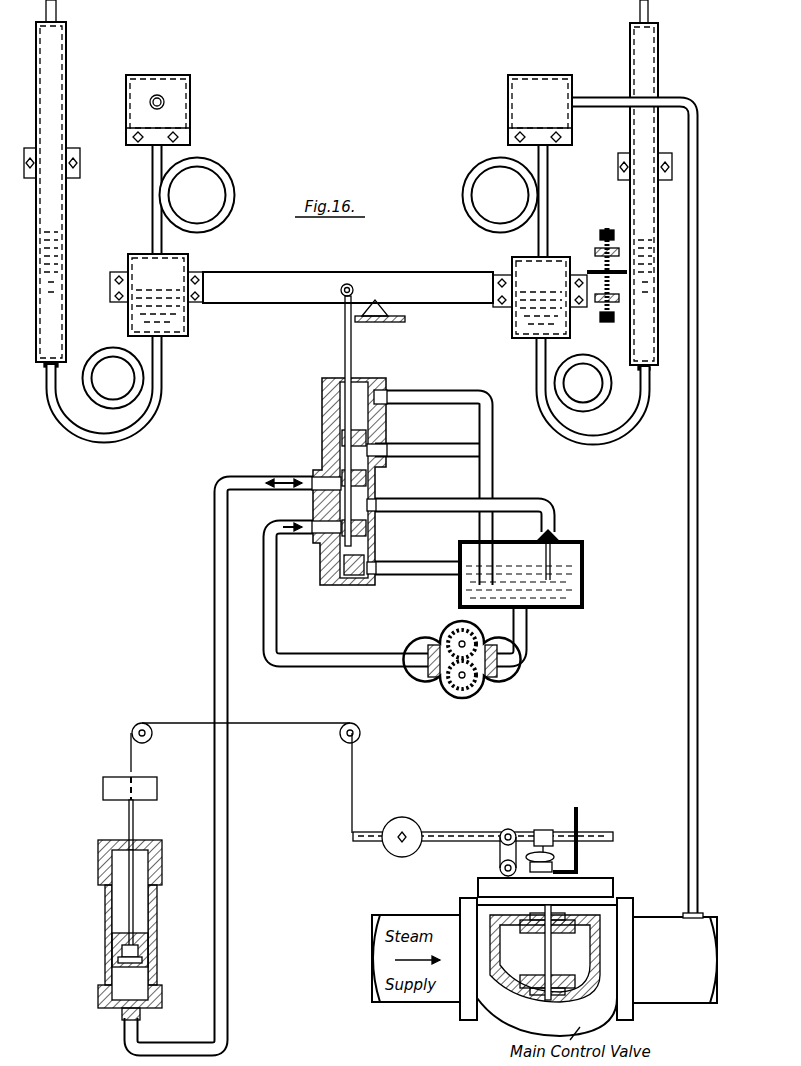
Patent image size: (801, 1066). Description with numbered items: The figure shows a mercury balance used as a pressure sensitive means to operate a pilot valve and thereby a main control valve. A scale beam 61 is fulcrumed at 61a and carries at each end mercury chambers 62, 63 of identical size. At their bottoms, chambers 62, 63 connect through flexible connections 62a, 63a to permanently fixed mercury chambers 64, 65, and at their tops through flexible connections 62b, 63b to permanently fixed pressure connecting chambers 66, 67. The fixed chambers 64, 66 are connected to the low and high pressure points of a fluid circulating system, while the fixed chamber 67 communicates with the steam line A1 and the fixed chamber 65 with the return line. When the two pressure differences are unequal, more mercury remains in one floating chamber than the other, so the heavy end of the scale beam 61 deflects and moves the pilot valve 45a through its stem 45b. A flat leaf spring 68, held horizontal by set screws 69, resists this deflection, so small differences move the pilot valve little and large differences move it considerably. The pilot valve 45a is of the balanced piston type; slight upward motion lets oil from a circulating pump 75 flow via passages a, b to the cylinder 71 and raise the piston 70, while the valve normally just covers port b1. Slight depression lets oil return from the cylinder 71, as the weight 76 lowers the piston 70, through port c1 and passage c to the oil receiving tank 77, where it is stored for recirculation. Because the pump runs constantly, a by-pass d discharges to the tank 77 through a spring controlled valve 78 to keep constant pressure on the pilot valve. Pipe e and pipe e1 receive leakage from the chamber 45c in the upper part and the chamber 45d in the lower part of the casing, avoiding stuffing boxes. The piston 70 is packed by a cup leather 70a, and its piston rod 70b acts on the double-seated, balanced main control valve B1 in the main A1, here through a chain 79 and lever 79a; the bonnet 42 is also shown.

The fixed mercury chamber 64 is at (40, 208).
The fixed mercury chamber 65 is at (660, 220).
The fixed pressure connecting chamber 66 is at (126, 100).
The fixed pressure connecting chamber 67 is at (508, 108).
The mercury chamber 62 is at (156, 295).
The flexible connection 62a is at (113, 378).
The flexible connection 62b is at (197, 195).
The mercury chamber 63 is at (540, 297).
The flexible connection 63a is at (583, 383).
The flexible connection 63b is at (500, 195).
The scale beam 61 is at (348, 287).
The fulcrum 61a is at (402, 287).
The flat leaf spring 68 is at (598, 268).
The set screws 69 is at (607, 230).
The pilot valve 45a is at (376, 482).
The pilot valve stem 45b is at (347, 344).
The upper chamber of pilot valve casing 45c is at (384, 380).
The lower chamber of pilot valve casing 45d is at (351, 578).
The passage a is at (350, 660).
The passage b is at (214, 560).
The port b1 is at (314, 478).
The passage c is at (427, 462).
The port c1 is at (384, 437).
The by-pass d is at (510, 503).
The pipe e is at (436, 481).
The pipe e1 is at (418, 556).
The circulating pump 75 is at (472, 697).
The oil receiving tank 77 is at (582, 551).
The spring controlled valve 78 is at (560, 540).
The piston 70 is at (112, 956).
The cup leather 70a is at (148, 953).
The piston rod 70b is at (129, 815).
The cylinder 71 is at (160, 925).
The weight 76 is at (157, 792).
The chain 79 is at (245, 778).
The lever 79a is at (476, 827).
The main control valve bonnet 42 is at (608, 895).
The main control valve B1 is at (535, 933).
The steam line A1 is at (675, 958).